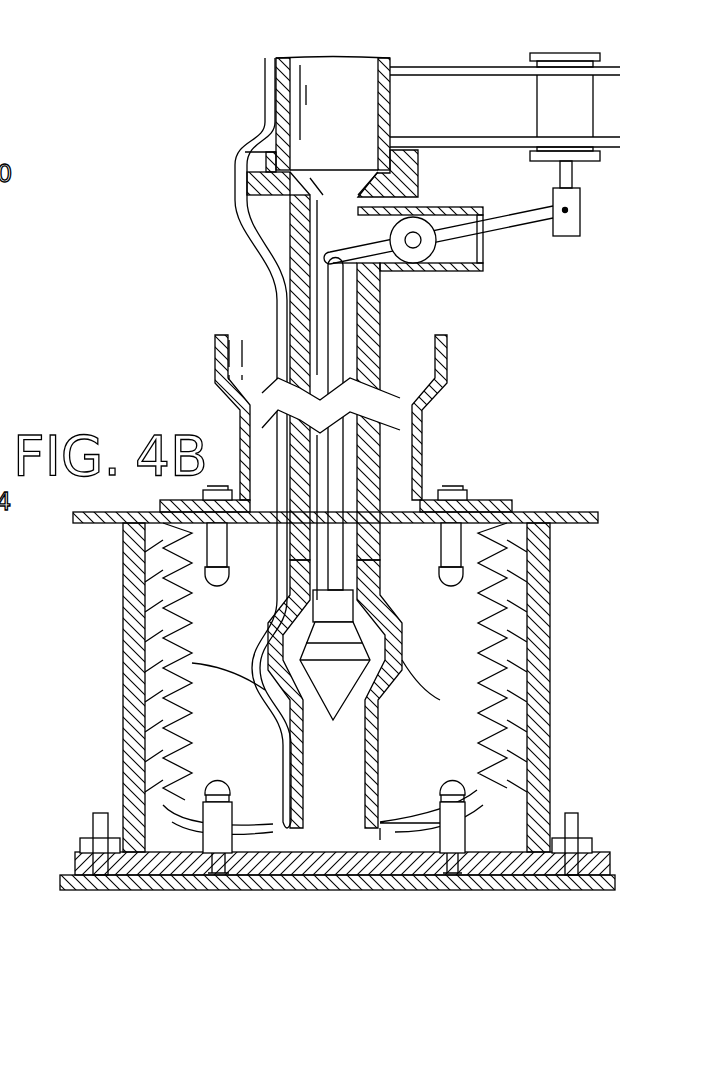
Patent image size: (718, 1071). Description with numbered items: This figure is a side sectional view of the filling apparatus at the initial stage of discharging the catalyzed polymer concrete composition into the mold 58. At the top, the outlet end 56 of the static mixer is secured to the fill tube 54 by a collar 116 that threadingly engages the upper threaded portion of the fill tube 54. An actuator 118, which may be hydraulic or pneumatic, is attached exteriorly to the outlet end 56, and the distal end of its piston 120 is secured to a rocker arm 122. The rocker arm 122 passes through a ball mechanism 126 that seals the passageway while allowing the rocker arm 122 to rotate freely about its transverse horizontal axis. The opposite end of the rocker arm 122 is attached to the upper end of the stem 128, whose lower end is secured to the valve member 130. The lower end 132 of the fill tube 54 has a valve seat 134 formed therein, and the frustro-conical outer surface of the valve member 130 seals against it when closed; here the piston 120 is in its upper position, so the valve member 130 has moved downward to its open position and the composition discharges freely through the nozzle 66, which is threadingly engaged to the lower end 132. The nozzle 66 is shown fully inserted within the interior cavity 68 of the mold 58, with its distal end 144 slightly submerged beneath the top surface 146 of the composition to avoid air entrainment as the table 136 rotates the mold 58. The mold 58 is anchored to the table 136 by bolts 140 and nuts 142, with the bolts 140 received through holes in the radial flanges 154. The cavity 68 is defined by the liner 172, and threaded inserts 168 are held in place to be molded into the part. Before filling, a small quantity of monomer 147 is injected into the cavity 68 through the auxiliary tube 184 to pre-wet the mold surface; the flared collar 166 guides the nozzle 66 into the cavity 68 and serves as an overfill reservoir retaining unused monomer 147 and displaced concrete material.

The fill tube 54 is at (290, 233).
The outlet end 56 is at (268, 90).
The mold 58 is at (553, 684).
The nozzle 66 is at (375, 725).
The interior cavity 68 is at (449, 705).
The collar 116 is at (250, 153).
The actuator 118 is at (560, 98).
The piston 120 is at (580, 193).
The rocker arm 122 is at (530, 218).
The ball mechanism 126 is at (420, 214).
The stem 128 is at (340, 502).
The valve member 130 is at (335, 671).
The lower end 132 is at (382, 603).
The valve seat 134 is at (295, 620).
The table 136 is at (652, 845).
The bolts 140 is at (101, 812).
The nuts 142 is at (85, 845).
The distal end 144 is at (273, 824).
The top surface 146 is at (393, 822).
The monomer 147 is at (197, 807).
The radial flanges 154 is at (585, 518).
The collar 166 is at (443, 412).
The threaded inserts 168 is at (215, 552).
The liner 172 is at (160, 730).
The auxiliary tube 184 is at (192, 664).